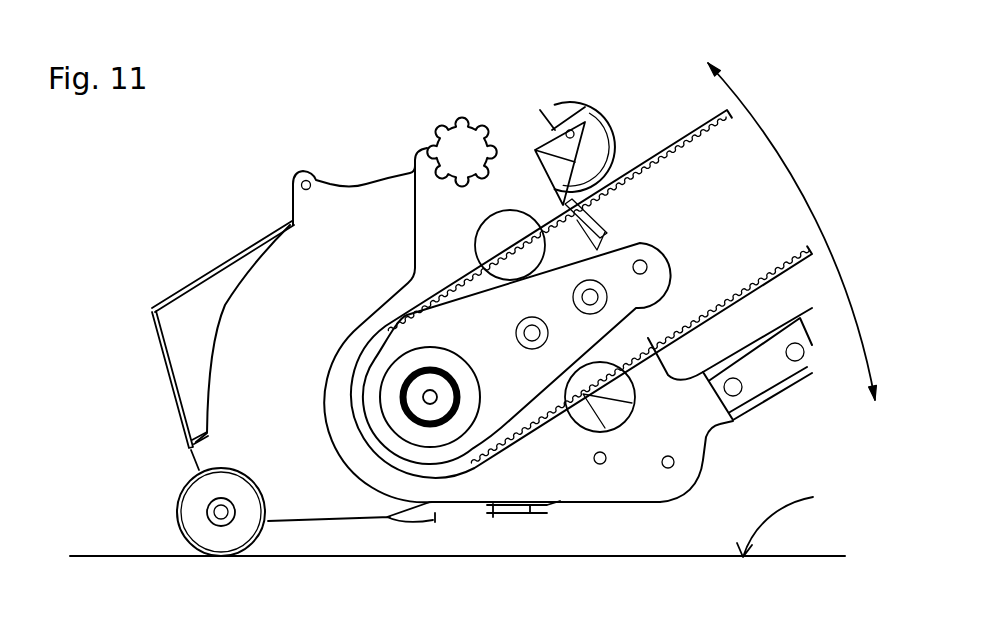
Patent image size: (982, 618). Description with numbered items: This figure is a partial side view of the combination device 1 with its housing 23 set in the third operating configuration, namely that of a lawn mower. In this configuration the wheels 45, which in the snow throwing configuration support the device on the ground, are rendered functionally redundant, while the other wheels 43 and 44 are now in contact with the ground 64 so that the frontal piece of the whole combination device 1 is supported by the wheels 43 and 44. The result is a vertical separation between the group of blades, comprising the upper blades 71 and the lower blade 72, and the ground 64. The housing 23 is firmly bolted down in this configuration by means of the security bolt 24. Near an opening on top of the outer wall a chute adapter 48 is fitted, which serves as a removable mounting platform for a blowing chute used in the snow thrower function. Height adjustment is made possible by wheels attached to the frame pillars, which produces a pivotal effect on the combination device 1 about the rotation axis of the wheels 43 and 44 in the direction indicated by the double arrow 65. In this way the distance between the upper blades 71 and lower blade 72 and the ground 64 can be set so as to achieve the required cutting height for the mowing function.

The combination device 1 is at (470, 316).
The housing 23 is at (363, 203).
The security bolt 24 is at (465, 143).
The wheel 43 is at (164, 509).
The wheel 44 is at (196, 499).
The wheel 45 is at (600, 135).
The chute adapter 48 is at (152, 310).
The ground 64 is at (786, 523).
The double arrow 65 is at (797, 187).
The upper blades 71 is at (436, 522).
The lower blade 72 is at (543, 510).